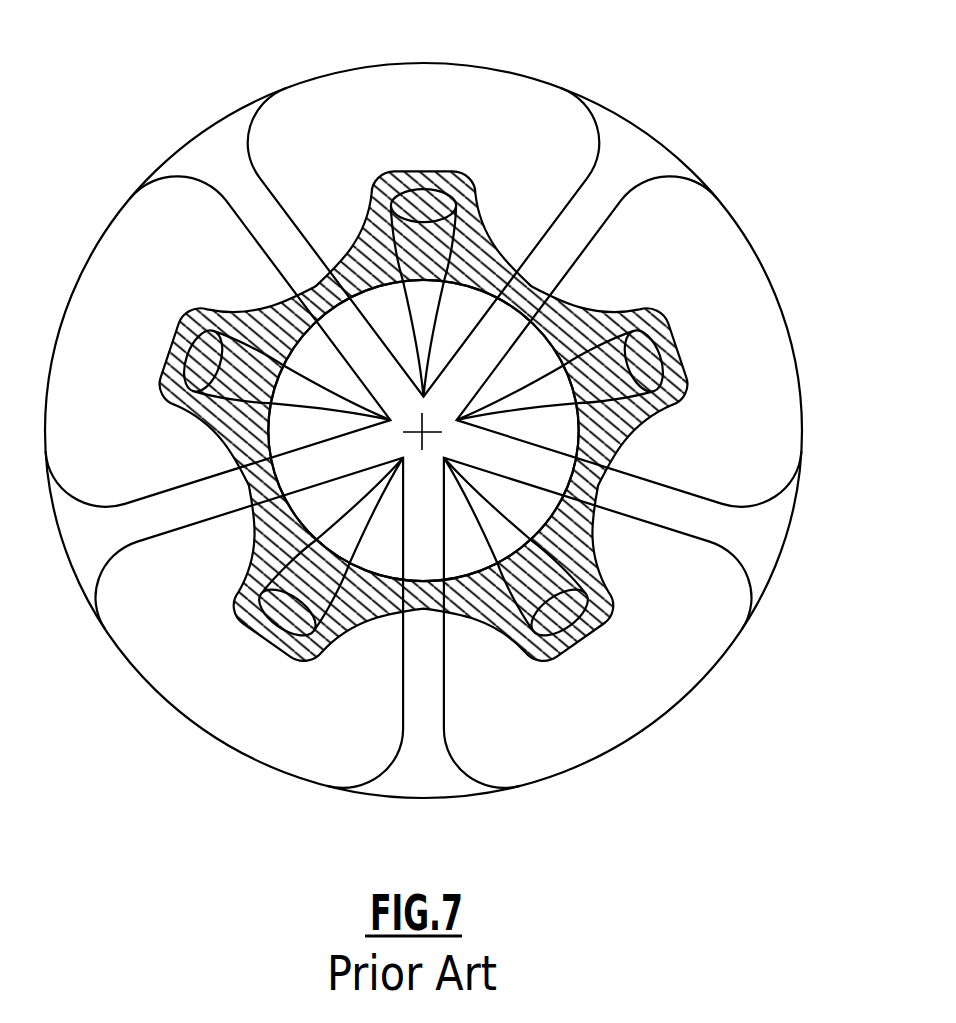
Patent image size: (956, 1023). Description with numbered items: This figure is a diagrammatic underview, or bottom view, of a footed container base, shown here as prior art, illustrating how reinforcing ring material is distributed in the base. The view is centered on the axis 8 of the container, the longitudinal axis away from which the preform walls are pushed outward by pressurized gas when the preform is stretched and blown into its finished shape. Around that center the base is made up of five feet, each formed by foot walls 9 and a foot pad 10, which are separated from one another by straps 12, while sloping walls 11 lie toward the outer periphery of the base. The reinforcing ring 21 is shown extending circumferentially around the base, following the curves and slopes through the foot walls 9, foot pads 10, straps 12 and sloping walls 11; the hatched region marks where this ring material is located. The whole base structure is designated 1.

The motor (prior art) 1 is at (463, 406).
The axis 8 is at (473, 400).
The foot walls 9 is at (532, 157).
The foot pads 10 is at (428, 198).
The sloping walls 11 is at (470, 92).
The straps 12 is at (247, 187).
The reinforcing ring 21 is at (677, 333).